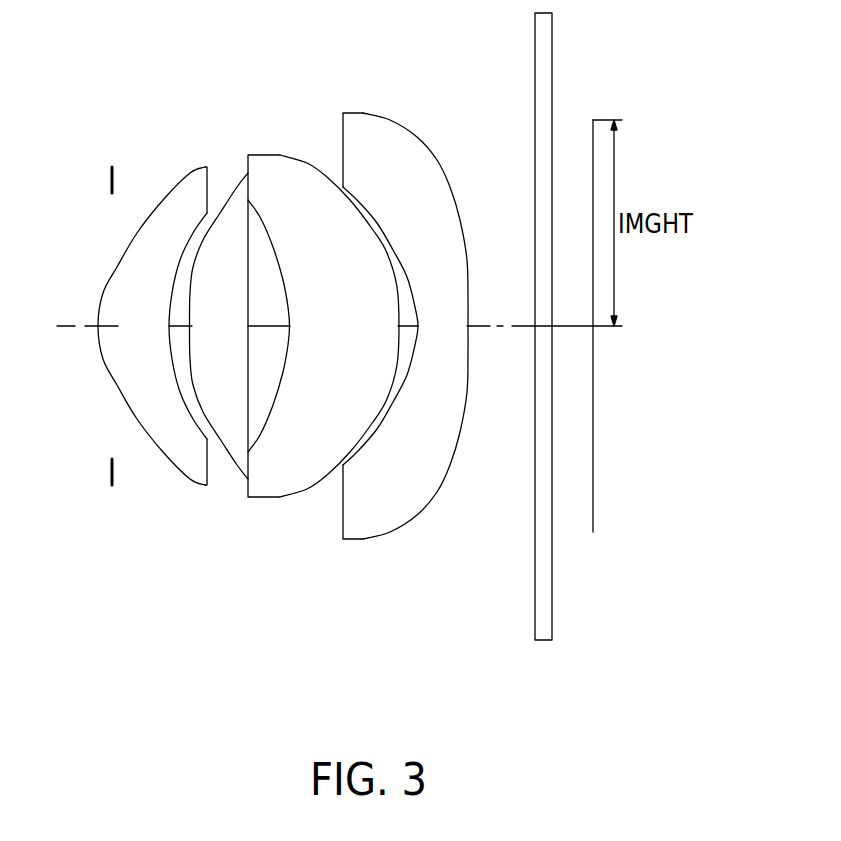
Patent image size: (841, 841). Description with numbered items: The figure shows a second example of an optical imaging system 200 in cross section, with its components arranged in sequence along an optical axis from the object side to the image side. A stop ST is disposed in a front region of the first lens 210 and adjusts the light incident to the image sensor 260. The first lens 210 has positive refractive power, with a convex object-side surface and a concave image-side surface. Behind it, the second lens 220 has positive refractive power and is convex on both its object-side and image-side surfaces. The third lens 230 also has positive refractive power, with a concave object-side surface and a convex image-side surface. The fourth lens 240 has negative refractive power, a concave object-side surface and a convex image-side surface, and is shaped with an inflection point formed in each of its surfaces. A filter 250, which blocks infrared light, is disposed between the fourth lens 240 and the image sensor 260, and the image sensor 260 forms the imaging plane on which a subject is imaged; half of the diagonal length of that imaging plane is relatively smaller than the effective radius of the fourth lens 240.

The optical imaging system 200 is at (94, 67).
The stop ST is at (108, 477).
The first lens 210 is at (180, 477).
The second lens 220 is at (225, 452).
The third lens 230 is at (273, 497).
The fourth lens 240 is at (390, 531).
The filter 250 is at (533, 598).
The image sensor 260 is at (596, 522).